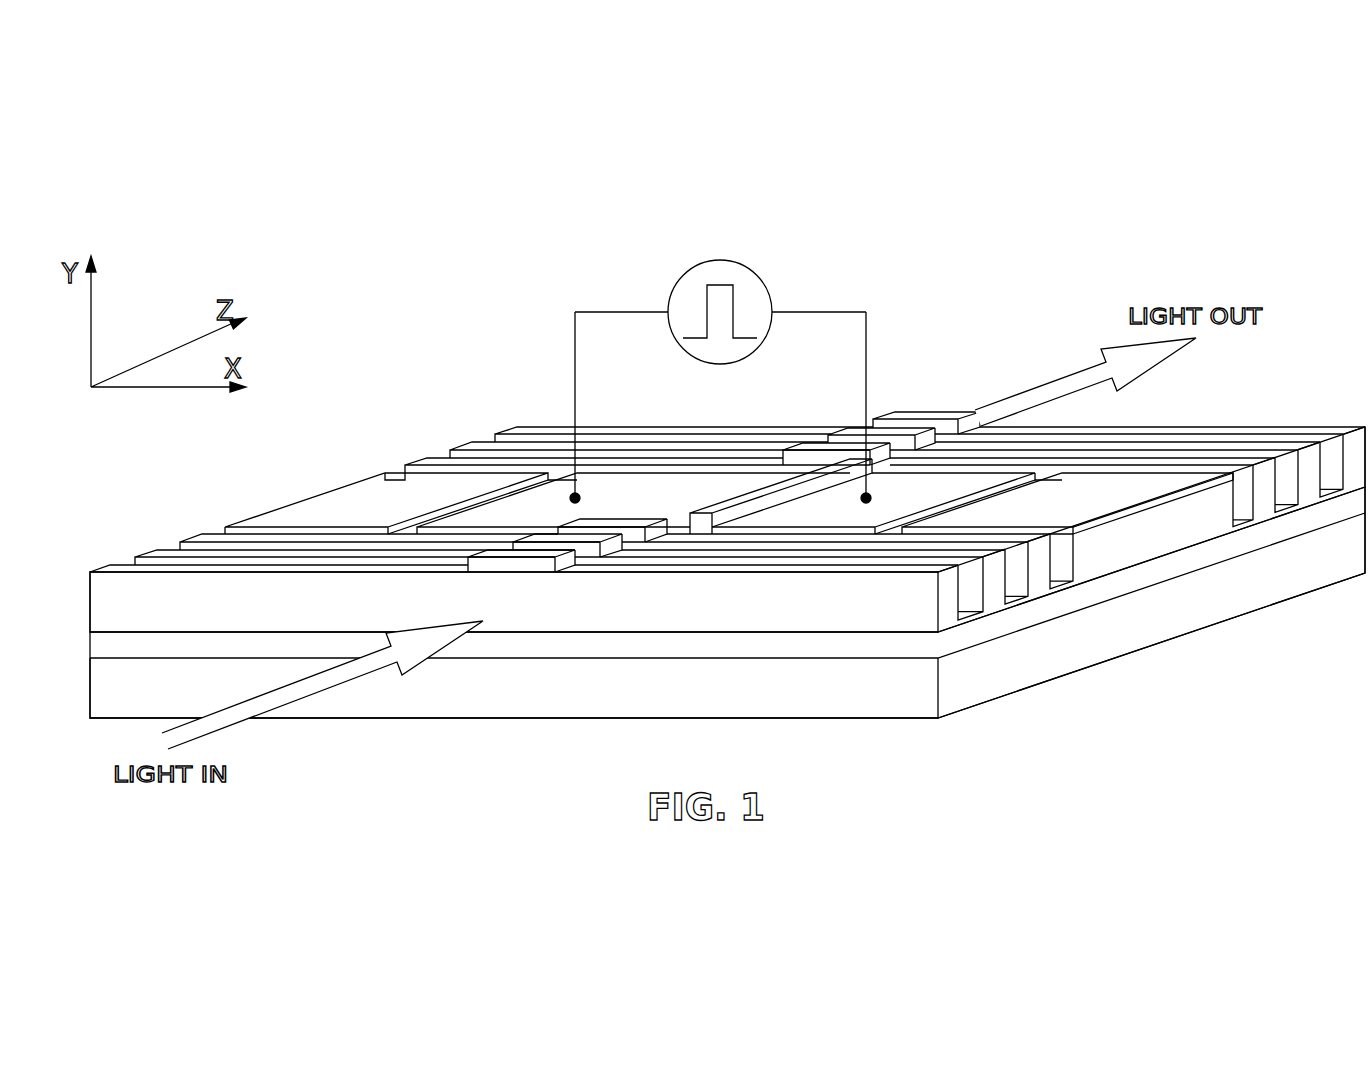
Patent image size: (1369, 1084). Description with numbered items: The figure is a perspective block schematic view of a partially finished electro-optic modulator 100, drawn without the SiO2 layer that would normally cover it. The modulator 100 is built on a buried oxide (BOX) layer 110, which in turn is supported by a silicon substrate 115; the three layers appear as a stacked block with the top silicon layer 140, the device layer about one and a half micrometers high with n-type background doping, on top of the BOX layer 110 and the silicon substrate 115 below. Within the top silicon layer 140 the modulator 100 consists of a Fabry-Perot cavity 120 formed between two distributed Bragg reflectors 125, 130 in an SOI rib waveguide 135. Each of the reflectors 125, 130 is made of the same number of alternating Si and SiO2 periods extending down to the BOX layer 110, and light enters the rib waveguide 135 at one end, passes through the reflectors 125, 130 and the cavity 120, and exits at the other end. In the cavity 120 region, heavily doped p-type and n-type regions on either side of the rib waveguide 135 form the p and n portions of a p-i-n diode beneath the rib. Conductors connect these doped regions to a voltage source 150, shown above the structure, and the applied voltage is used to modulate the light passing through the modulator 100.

The electro-optic modulator 100 is at (1115, 246).
The buried oxide (BOX) layer 110 is at (90, 639).
The silicon substrate 115 is at (90, 680).
The Fabry-Perot cavity 120 is at (380, 464).
The distributed Bragg reflector 125 is at (200, 521).
The distributed Bragg reflector 130 is at (510, 421).
The SOI rib waveguide 135 is at (931, 410).
The top silicon layer 140 is at (90, 603).
The voltage source 150 is at (685, 275).